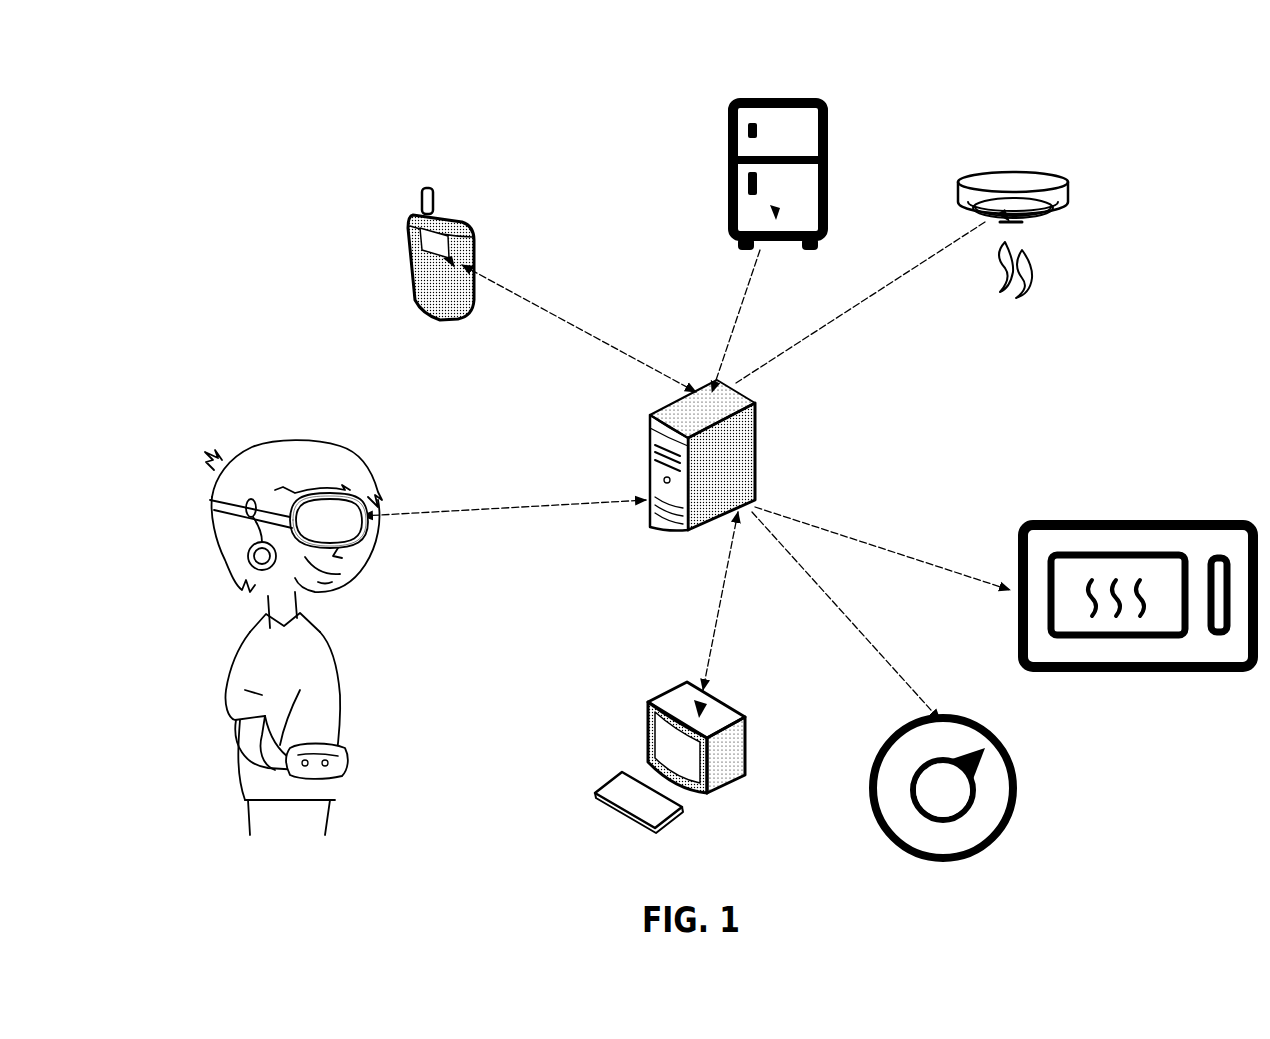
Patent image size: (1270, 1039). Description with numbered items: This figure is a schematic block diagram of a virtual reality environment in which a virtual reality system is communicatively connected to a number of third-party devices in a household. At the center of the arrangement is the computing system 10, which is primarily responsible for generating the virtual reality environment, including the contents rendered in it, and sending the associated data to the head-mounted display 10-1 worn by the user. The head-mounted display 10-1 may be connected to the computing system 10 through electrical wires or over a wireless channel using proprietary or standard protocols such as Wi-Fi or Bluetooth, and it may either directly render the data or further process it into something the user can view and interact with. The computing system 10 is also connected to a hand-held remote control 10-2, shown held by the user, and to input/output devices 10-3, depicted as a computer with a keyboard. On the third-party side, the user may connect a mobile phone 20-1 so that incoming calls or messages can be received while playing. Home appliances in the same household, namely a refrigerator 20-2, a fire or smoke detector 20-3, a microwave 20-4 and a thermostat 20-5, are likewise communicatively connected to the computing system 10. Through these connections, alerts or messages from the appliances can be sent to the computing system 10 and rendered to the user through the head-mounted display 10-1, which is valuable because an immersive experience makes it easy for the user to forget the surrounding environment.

The computing system 10 is at (735, 478).
The head-mounted display 10-1 is at (348, 528).
The hand-held remote control 10-2 is at (325, 732).
The input/output devices 10-3 is at (746, 745).
The mobile phone 20-1 is at (457, 215).
The refrigerator 20-2 is at (780, 95).
The fire or smoke detector 20-3 is at (1017, 188).
The microwave 20-4 is at (1132, 520).
The thermostat 20-5 is at (1015, 778).